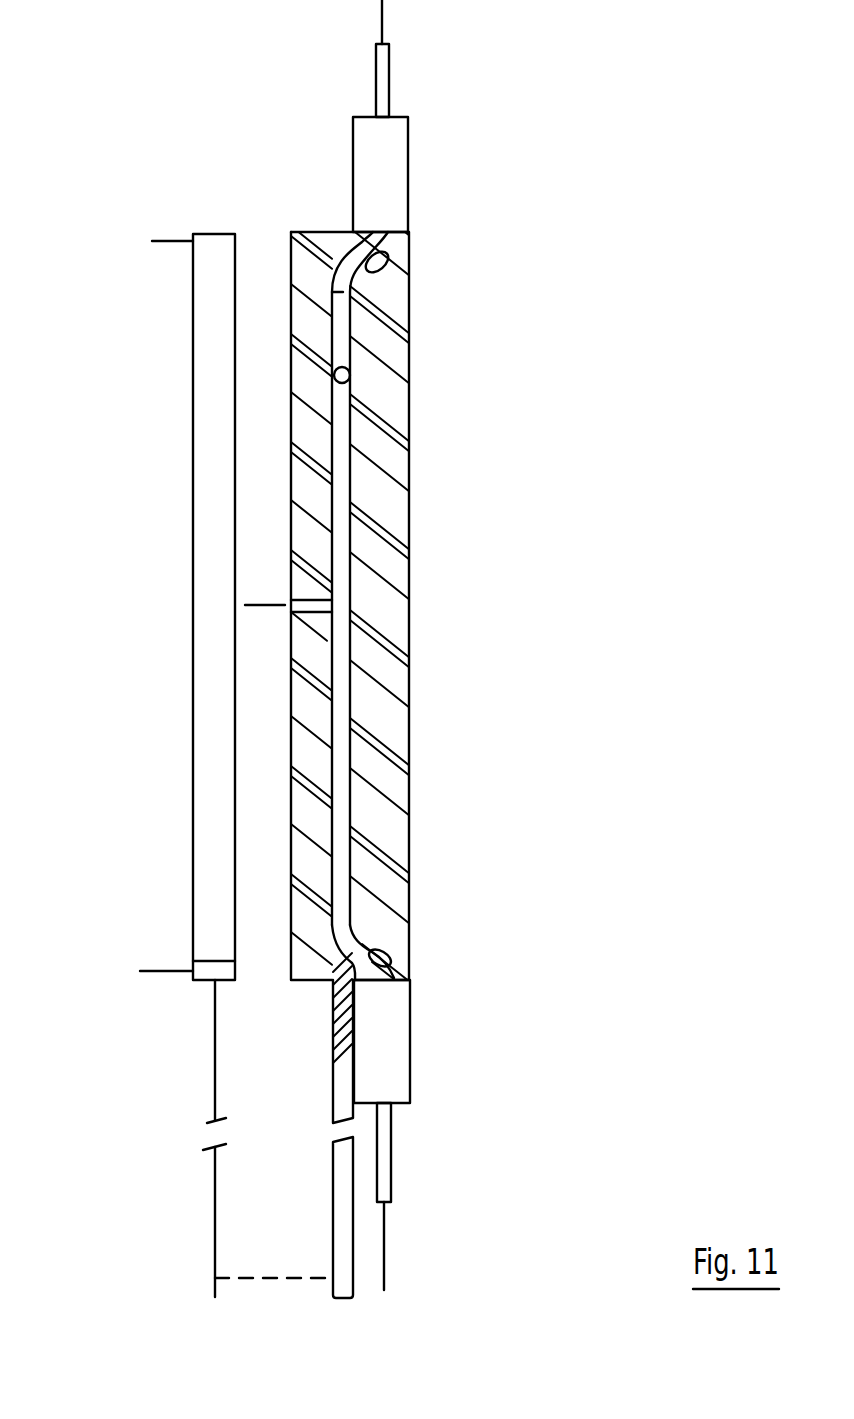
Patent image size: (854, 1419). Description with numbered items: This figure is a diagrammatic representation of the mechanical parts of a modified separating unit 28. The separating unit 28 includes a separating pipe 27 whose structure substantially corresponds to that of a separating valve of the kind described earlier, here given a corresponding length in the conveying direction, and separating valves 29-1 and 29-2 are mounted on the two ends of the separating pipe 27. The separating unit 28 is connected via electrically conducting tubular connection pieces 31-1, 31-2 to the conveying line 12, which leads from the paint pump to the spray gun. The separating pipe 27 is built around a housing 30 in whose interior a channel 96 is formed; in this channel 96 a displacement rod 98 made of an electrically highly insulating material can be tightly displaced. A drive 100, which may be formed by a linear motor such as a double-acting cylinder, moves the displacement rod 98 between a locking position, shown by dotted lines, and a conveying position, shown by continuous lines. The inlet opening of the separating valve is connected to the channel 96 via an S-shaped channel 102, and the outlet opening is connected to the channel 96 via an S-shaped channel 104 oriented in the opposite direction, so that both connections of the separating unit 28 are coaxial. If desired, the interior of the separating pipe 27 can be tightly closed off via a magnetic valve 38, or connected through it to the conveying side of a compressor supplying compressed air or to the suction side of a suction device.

The line 12 is at (385, 1272).
The separating pipe 27 is at (453, 660).
The separating unit 28 is at (612, 386).
The separating valve 29-1 is at (392, 1048).
The separating valve 29-2 is at (395, 192).
The housing 30 is at (380, 467).
The tubular connection piece 31-1 is at (385, 1150).
The tubular connection piece 31-2 is at (382, 88).
The 3/3 magnetic valve 38 is at (178, 605).
The channel 96 is at (349, 380).
The displacement rod 98 is at (342, 1235).
The drive 100 is at (205, 445).
The S-shaped channel 102 is at (386, 956).
The S-shaped channel 104 is at (375, 277).